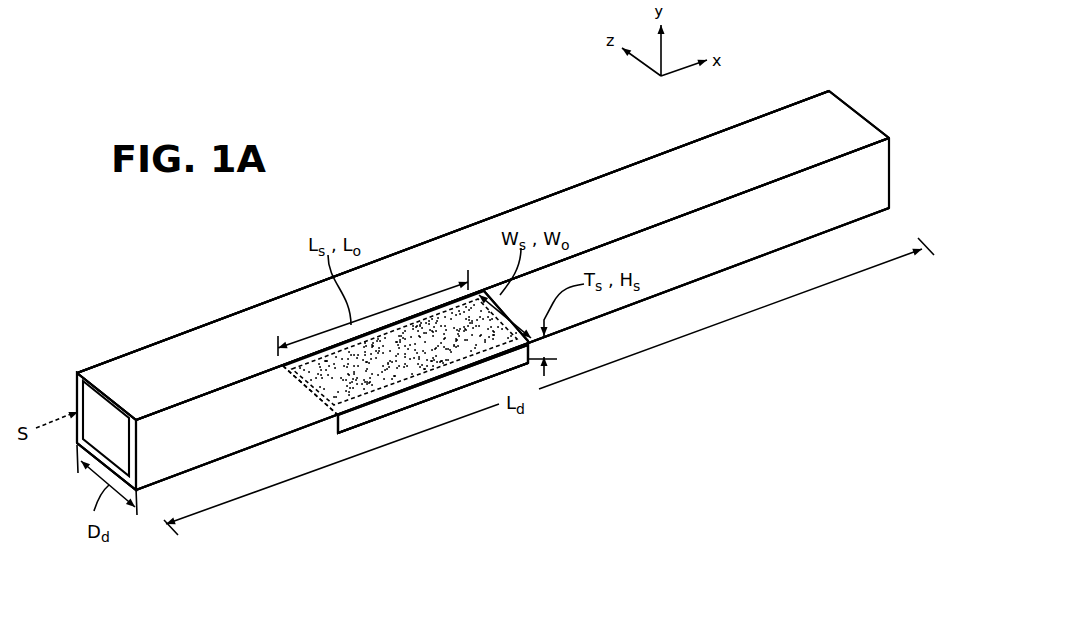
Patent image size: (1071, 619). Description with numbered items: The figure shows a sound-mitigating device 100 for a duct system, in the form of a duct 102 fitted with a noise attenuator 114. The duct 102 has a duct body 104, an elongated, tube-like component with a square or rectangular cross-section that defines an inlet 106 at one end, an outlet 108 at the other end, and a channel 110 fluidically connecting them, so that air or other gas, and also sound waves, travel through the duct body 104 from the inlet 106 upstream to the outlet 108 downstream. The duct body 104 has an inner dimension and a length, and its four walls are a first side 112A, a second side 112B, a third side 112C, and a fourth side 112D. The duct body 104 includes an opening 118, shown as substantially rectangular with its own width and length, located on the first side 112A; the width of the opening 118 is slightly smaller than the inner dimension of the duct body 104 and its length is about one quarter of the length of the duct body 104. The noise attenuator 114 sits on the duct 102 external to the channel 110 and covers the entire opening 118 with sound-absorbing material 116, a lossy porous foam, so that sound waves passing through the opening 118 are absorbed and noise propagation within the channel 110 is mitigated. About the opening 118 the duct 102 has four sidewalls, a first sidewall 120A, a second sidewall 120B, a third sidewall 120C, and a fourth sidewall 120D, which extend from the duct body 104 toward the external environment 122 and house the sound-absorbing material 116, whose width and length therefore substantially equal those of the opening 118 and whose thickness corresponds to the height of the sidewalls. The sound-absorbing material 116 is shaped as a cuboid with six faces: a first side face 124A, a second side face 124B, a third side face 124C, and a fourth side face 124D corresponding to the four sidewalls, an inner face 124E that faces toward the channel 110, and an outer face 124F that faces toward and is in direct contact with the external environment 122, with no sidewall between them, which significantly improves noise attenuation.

The sound-mitigating device 100 is at (477, 112).
The duct 102 is at (462, 230).
The duct body 104 is at (554, 195).
The inlet 106 is at (77, 375).
The outlet 108 is at (828, 93).
The channel 110 is at (98, 413).
The first side 112A is at (200, 470).
The second side 112B is at (247, 423).
The third side 112C is at (167, 362).
The fourth side 112D is at (60, 399).
The noise attenuator 114 is at (364, 427).
The sound-absorbing material 116 is at (313, 352).
The opening 118 is at (423, 306).
The first sidewall 120A is at (458, 383).
The second sidewall 120B is at (529, 362).
The third sidewall 120C is at (278, 383).
The fourth sidewall 120D is at (337, 419).
The external environment 122 is at (807, 377).
The first side face 124A is at (433, 432).
The second side face 124B is at (602, 351).
The third side face 124C is at (268, 347).
The fourth side face 124D is at (329, 490).
The inner face 124E is at (447, 313).
The outer face 124F is at (412, 418).